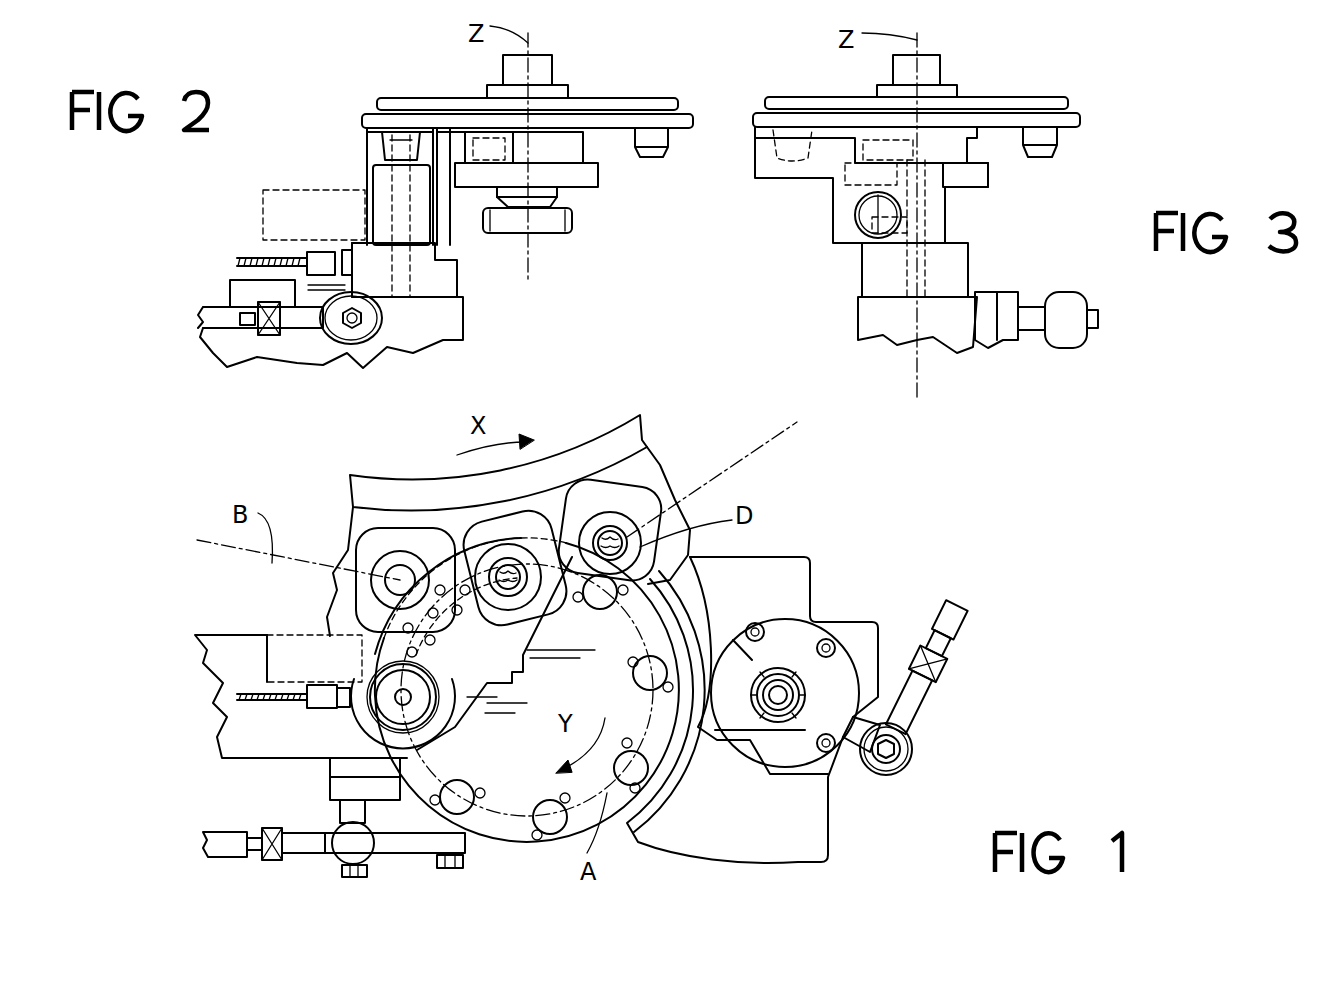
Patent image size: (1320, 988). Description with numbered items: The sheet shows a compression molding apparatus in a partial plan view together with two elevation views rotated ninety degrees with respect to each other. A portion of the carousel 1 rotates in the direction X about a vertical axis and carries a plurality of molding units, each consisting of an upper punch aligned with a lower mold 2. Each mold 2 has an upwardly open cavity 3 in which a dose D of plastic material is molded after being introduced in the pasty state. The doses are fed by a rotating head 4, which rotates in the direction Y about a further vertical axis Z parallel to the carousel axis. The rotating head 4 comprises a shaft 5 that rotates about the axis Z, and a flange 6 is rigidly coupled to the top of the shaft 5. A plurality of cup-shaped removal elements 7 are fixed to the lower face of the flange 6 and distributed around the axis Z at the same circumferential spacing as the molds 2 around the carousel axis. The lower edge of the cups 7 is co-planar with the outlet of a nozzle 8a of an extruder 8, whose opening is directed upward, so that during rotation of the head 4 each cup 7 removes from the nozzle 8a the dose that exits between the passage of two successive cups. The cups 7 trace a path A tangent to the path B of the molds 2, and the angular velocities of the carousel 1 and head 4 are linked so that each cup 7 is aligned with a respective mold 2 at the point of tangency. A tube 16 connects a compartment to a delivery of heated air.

In FIG. 1, the carousel 1 is at (597, 425).
In FIG. 1, the lower mold 2 is at (615, 530).
In FIG. 1, the cavity 3 is at (632, 535).
In FIG. 2, the rotating head 4 is at (632, 88).
In FIG. 3, the rotating head 4 is at (1016, 86).
In FIG. 1, the rotating head 4 is at (507, 858).
In FIG. 2, the shaft 5 is at (536, 236).
In FIG. 2, the flange 6 is at (362, 118).
In FIG. 3, the flange 6 is at (1078, 118).
In FIG. 2, the removal element 7 is at (652, 158).
In FIG. 3, the removal element 7 is at (1040, 160).
In FIG. 2, the extruder 8 is at (240, 290).
In FIG. 3, the extruder 8 is at (870, 318).
In FIG. 1, the extruder 8 is at (240, 653).
In FIG. 2, the nozzle 8a is at (382, 182).
In FIG. 3, the nozzle 8a is at (940, 178).
In FIG. 1, the nozzle 8a is at (407, 700).
In FIG. 2, the tube 16 is at (283, 213).
In FIG. 3, the tube 16 is at (855, 212).